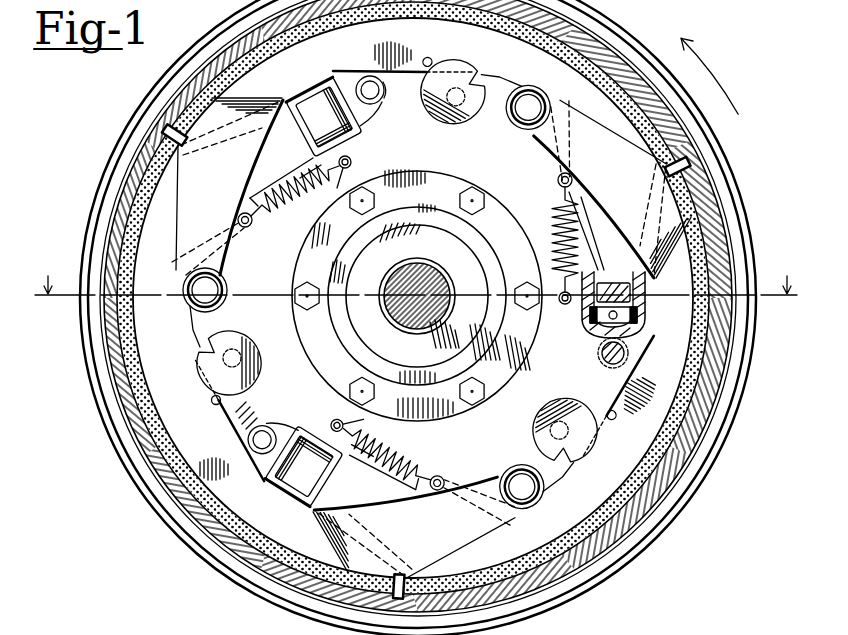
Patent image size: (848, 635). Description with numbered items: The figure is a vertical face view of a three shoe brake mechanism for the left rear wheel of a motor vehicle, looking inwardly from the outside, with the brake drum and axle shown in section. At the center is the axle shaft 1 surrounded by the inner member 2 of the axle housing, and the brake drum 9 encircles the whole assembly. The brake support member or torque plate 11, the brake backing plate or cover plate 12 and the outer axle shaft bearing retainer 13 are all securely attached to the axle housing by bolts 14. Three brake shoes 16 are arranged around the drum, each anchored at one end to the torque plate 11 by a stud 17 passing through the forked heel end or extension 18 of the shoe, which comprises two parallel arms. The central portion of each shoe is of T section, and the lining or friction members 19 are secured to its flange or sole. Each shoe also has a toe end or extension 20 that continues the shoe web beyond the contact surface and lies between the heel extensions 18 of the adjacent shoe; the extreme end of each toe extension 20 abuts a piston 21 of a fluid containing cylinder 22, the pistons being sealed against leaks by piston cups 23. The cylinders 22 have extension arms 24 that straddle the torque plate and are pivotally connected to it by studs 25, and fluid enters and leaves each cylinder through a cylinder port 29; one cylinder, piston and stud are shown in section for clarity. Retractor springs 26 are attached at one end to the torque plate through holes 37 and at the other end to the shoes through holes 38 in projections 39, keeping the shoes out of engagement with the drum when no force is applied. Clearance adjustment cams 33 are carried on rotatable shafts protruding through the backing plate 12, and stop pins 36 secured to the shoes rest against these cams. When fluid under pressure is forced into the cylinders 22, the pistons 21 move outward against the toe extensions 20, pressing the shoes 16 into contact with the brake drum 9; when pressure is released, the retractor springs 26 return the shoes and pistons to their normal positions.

The axle shaft 1 is at (432, 288).
The inner member of the axle housing 2 is at (416, 277).
The brake drum 9 is at (732, 236).
The brake support member or torque plate 11 is at (418, 308).
The brake backing plate or cover plate 12 is at (742, 354).
The outer axle shaft bearing retainer 13 is at (417, 295).
The bolts 14 is at (462, 190).
The brake shoes 16 is at (413, 298).
The studs 17 is at (190, 284).
The forked heel ends or extensions 18 is at (242, 187).
The lining or friction members 19 is at (166, 130).
The toe ends or extensions 20 is at (361, 134).
The pistons 21 is at (634, 297).
The fluid containing cylinders 22 is at (322, 96).
The piston cups 23 is at (640, 325).
The extension arms 24 is at (362, 80).
The studs 25 is at (384, 98).
The retractor springs 26 is at (280, 212).
The cylinder ports 29 is at (590, 340).
The clearance adjustment cams 33 is at (229, 363).
The stop pins 36 is at (212, 402).
The holes 37 is at (352, 162).
The holes 38 is at (238, 217).
The projections 39 is at (244, 229).